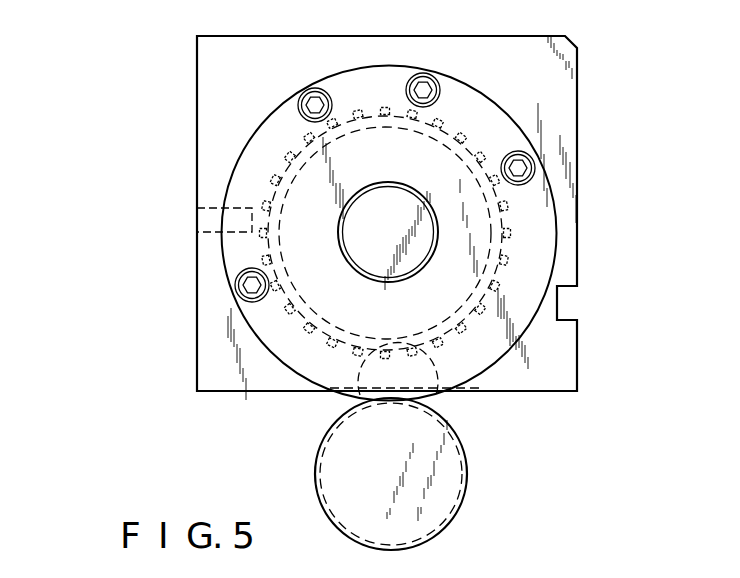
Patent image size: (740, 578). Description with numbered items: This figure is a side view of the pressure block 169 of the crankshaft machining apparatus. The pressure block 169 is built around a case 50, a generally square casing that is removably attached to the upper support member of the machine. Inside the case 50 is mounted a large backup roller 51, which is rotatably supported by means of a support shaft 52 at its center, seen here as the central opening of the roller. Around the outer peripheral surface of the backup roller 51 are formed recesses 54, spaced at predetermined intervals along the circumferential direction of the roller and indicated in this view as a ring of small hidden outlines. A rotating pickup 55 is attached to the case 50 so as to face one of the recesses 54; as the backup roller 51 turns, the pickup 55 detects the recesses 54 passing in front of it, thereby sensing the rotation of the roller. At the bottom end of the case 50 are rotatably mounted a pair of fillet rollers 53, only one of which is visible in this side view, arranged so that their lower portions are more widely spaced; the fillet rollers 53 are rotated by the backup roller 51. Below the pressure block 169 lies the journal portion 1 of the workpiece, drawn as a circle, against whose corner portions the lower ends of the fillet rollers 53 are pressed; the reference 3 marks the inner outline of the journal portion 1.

The pressure block 169 is at (150, 102).
The case 50 is at (546, 386).
The backup roller 51 is at (492, 232).
The support shaft 52 is at (392, 268).
The fillet roller 53 is at (447, 388).
The recess 54 is at (270, 142).
The rotating pickup 55 is at (200, 224).
The journal portion 1 is at (348, 466).
The workpiece inner surface 3 is at (452, 480).